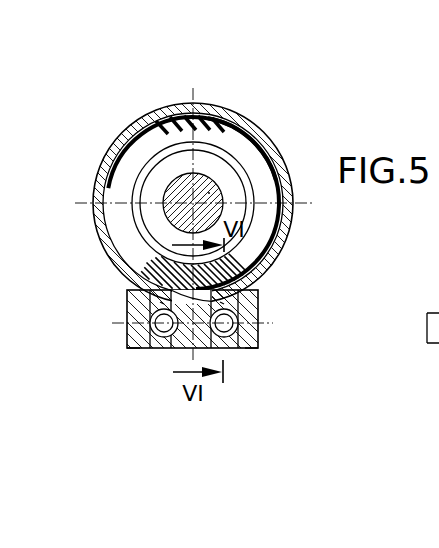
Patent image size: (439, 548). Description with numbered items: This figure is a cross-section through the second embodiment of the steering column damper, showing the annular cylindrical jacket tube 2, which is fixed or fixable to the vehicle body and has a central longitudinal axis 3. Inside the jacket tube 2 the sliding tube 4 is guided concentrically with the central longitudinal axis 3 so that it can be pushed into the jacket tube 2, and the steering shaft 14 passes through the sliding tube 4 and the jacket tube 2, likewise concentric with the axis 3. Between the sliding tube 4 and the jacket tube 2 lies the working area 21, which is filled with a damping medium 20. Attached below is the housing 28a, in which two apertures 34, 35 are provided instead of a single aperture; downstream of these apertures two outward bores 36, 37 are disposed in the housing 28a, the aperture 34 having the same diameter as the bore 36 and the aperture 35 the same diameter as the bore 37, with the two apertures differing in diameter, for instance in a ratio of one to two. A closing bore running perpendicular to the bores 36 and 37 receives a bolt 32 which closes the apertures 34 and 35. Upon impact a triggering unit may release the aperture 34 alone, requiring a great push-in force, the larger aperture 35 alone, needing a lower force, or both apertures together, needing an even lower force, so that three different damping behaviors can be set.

The jacket tube 2 is at (272, 142).
The central longitudinal axis 3 is at (190, 200).
The sliding tube 4 is at (236, 155).
The steering shaft 14 is at (209, 194).
The damping medium 20 is at (227, 118).
The working area 21 is at (177, 128).
The housing 28a is at (137, 330).
The bolt 32 is at (258, 348).
The aperture 34 is at (164, 303).
The aperture 35 is at (222, 302).
The outward bore 36 is at (165, 338).
The outward bore 37 is at (228, 340).